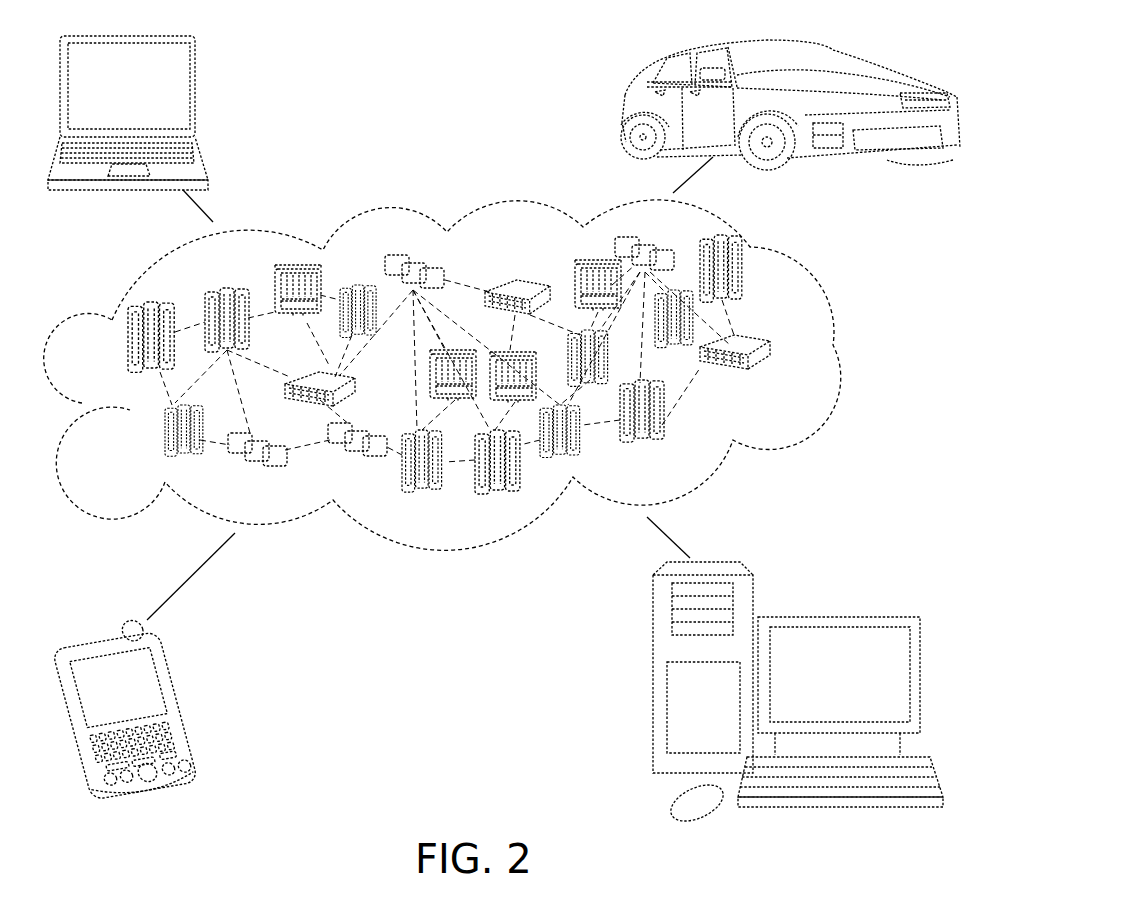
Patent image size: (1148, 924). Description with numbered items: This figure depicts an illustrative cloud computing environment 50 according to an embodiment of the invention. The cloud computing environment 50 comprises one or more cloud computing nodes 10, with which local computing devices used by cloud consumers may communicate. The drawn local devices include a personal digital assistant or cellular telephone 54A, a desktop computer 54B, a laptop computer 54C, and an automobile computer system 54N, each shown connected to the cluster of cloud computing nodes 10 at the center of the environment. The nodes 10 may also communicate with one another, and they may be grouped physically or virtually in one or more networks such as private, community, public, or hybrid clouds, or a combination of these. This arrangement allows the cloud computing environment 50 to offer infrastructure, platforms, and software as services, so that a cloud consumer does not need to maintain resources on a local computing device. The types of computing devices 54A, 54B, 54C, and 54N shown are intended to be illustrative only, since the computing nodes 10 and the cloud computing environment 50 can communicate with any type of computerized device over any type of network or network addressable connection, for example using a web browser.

The cloud computing node 10 is at (780, 375).
The cloud computing environment 50 is at (833, 347).
The personal digital assistant or cellular telephone 54A is at (186, 700).
The desktop computer 54B is at (833, 616).
The laptop computer 54C is at (198, 96).
The automobile computer system 54N is at (622, 112).